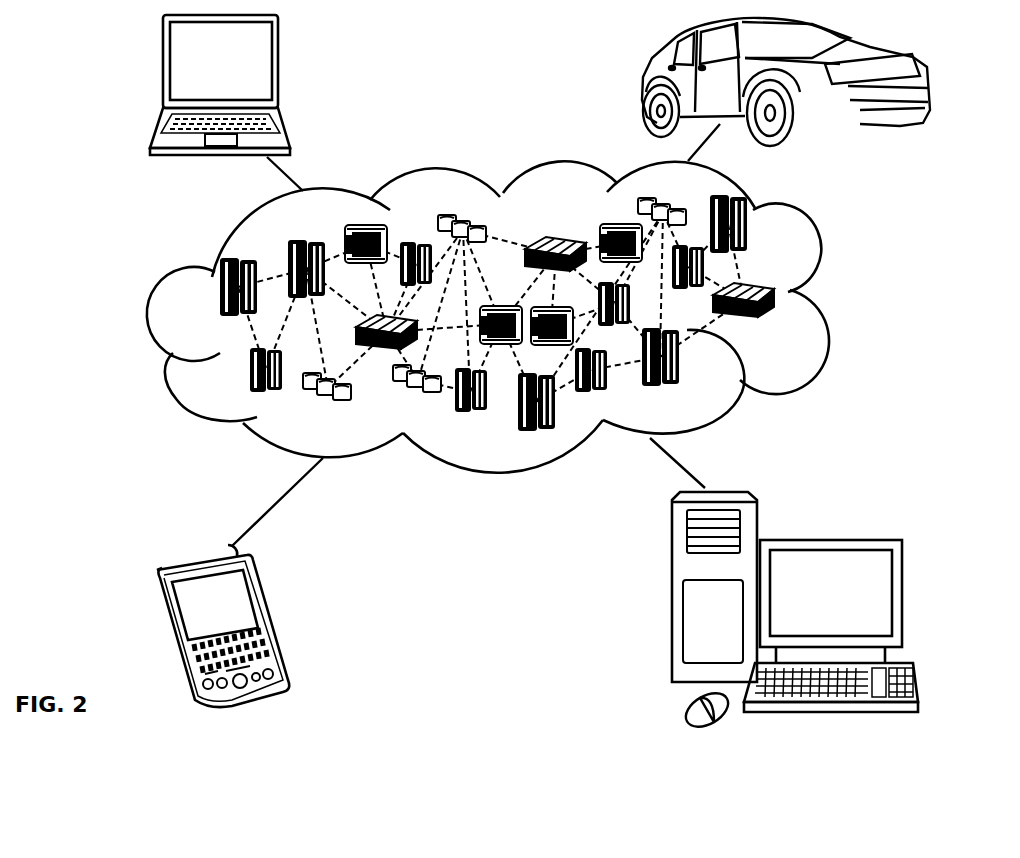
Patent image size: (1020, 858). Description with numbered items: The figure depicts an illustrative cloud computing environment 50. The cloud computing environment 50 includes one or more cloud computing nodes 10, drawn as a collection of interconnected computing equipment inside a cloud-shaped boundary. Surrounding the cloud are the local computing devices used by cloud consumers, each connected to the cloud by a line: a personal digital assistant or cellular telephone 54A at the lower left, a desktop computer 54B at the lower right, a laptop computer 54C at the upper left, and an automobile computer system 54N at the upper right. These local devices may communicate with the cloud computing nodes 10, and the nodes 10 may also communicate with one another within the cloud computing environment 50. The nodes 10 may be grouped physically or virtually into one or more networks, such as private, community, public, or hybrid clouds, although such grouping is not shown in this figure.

The cloud computing node 10 is at (784, 321).
The cloud computing environment 50 is at (515, 316).
The personal digital assistant (PDA) or cellular telephone 54A is at (273, 617).
The desktop computer 54B is at (830, 538).
The laptop computer 54C is at (279, 68).
The automobile computer system 54N is at (647, 84).